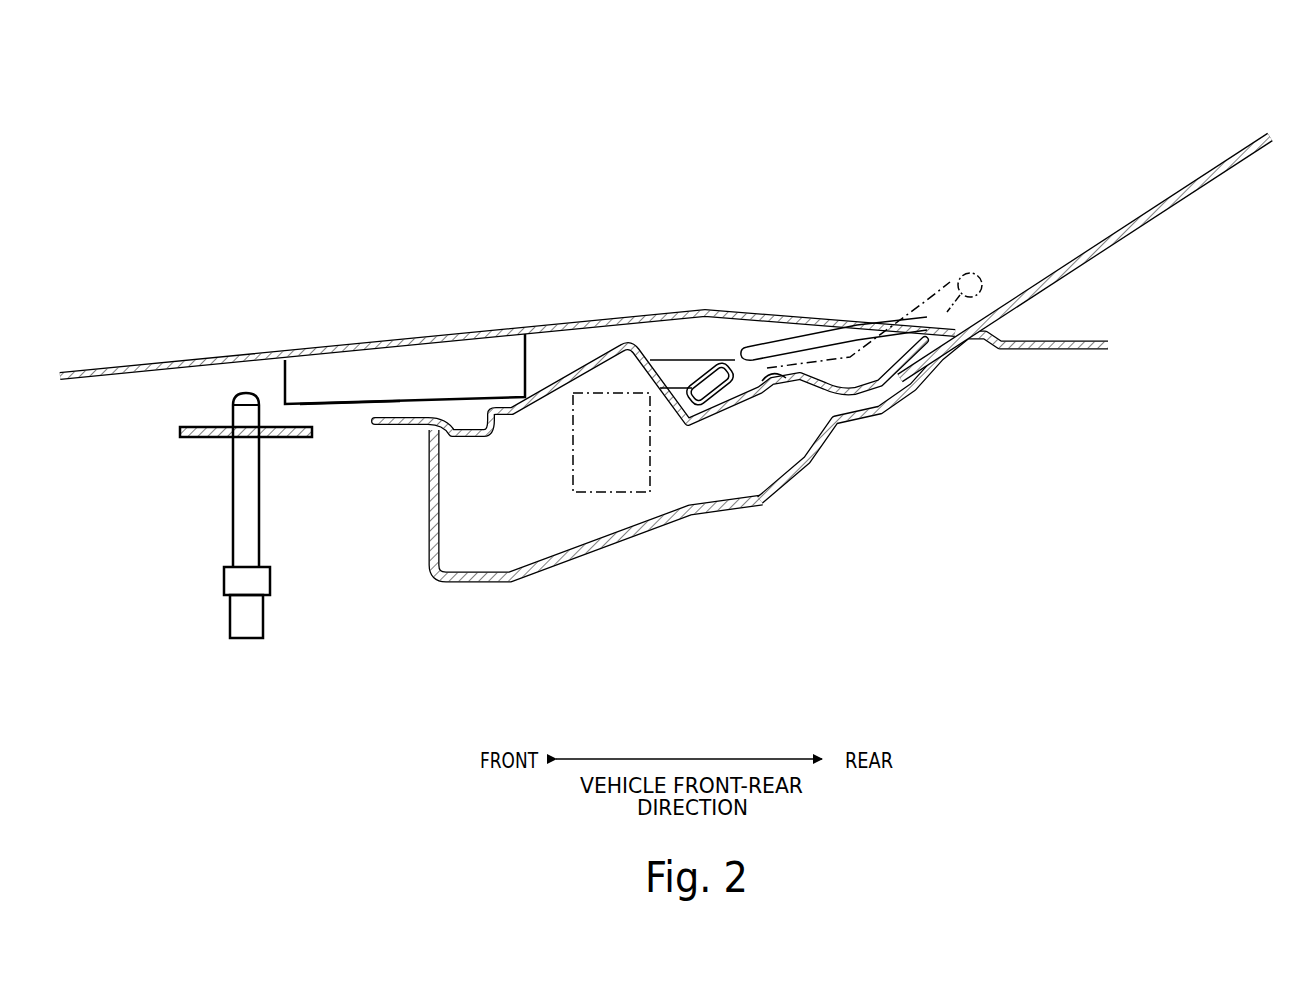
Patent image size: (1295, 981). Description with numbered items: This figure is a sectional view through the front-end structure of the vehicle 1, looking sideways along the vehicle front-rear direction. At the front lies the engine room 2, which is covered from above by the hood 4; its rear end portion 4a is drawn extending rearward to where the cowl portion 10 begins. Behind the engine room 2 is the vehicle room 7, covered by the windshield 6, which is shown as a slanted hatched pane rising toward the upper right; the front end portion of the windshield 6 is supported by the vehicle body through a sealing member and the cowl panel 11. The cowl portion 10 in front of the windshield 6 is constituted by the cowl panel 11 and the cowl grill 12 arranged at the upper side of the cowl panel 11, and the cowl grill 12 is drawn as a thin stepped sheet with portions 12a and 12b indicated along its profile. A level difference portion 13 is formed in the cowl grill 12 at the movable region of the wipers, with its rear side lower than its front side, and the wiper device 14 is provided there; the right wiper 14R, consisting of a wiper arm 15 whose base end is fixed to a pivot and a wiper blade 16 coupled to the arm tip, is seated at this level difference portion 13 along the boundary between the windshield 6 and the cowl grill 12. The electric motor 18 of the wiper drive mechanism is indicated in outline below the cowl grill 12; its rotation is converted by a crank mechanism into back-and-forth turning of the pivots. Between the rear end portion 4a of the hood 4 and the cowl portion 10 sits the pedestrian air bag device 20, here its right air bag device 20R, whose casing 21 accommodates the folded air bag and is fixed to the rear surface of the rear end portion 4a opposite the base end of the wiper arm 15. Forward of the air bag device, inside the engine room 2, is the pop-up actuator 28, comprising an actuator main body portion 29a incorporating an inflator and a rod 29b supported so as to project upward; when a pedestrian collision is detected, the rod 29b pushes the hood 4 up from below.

The vehicle 1 is at (463, 158).
The engine room 2 is at (97, 490).
The hood 4 is at (507, 308).
The rear end portion 4a is at (538, 327).
The windshield 6 is at (1157, 200).
The vehicle room 7 is at (1122, 449).
The cowl portion 10 is at (543, 527).
The cowl panel 11 is at (883, 416).
The cowl grill 12 is at (515, 421).
The upper portion of reinforcement member 12a is at (695, 338).
The bead portion 12b is at (760, 383).
The level difference portion 13 is at (688, 364).
The wiper device 14 is at (861, 267).
The right wiper 14R is at (861, 267).
The wiper arm 15 is at (760, 346).
The wiper blade 16 is at (960, 278).
The electric motor 18 is at (598, 494).
The pedestrian air bag device 20 is at (405, 322).
The right air bag device 20R is at (358, 382).
The casing 21 is at (341, 405).
The pop-up actuator 28 is at (220, 511).
The actuator main body portion 29a is at (250, 540).
The rod 29b is at (240, 410).